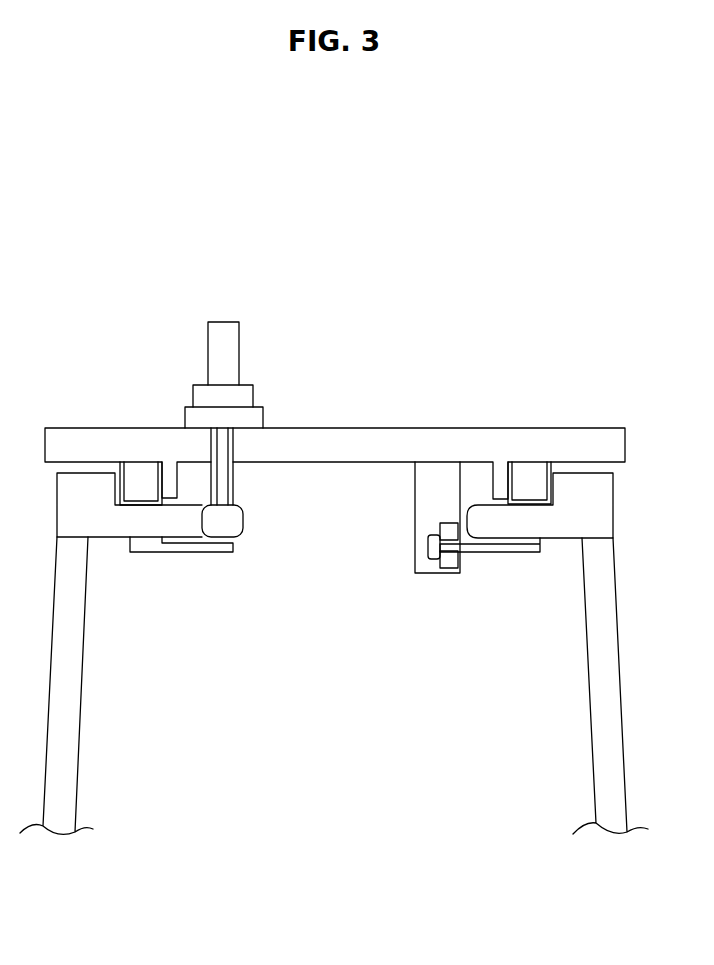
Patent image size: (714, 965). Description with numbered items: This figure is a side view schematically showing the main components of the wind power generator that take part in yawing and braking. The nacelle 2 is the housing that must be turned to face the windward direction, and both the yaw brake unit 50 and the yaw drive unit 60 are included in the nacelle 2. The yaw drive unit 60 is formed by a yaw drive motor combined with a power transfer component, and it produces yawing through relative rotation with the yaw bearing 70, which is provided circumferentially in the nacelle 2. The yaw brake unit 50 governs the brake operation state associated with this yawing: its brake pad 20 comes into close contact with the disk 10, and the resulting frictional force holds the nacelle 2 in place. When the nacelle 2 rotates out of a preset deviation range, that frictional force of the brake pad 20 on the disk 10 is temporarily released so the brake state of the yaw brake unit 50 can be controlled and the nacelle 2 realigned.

The nacelle 2 is at (565, 428).
The disk 10 is at (183, 560).
The brake pad 20 is at (458, 562).
The yaw brake unit 50 is at (430, 578).
The yaw drive unit 60 is at (198, 308).
The yaw bearing 70 is at (138, 465).